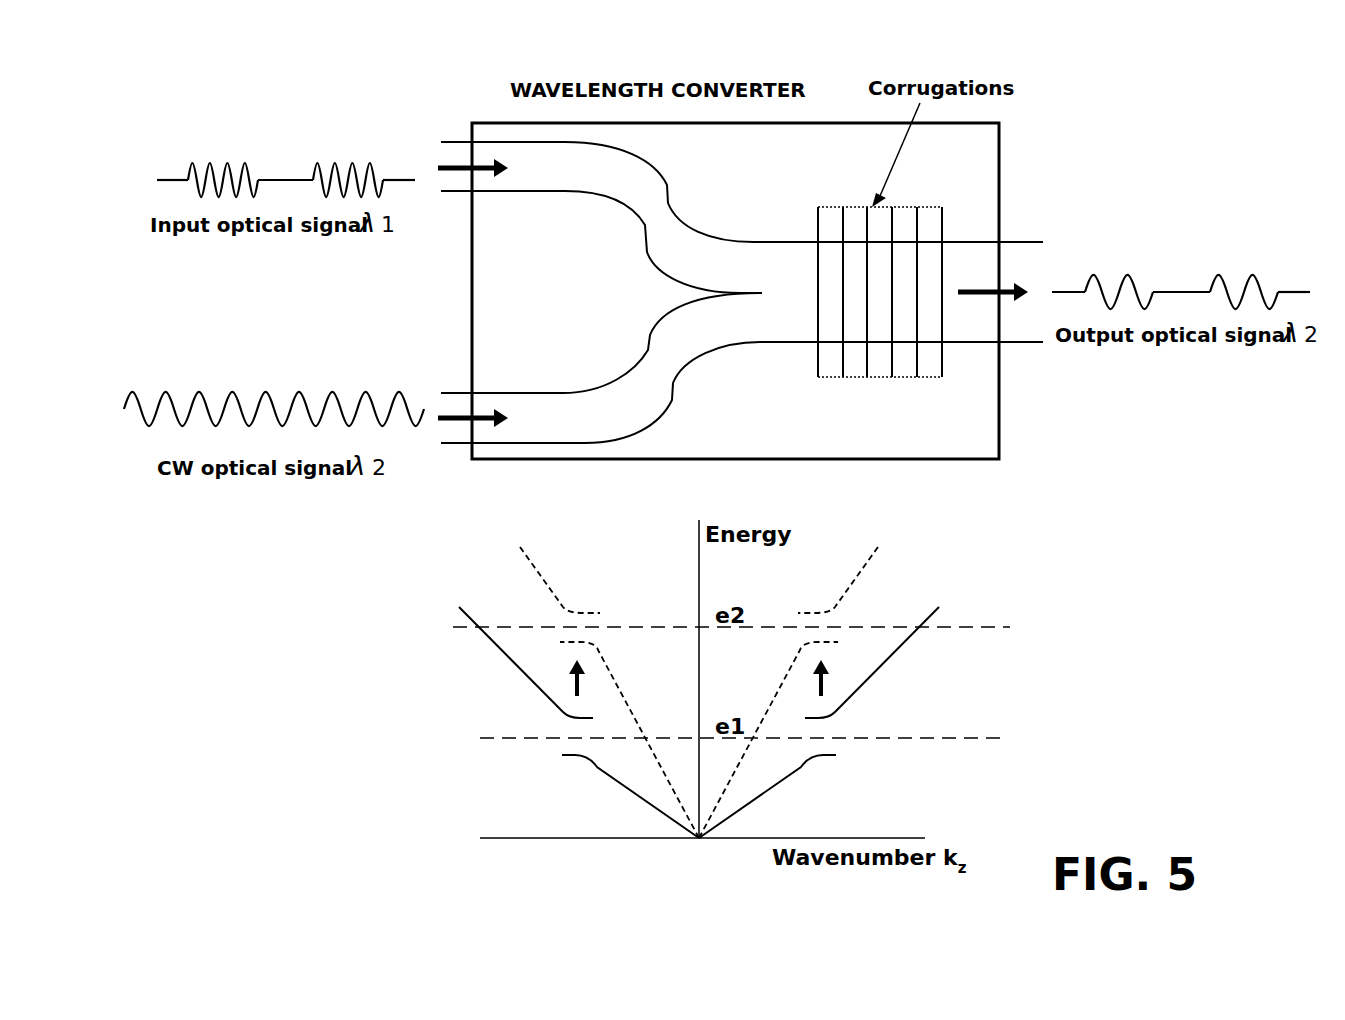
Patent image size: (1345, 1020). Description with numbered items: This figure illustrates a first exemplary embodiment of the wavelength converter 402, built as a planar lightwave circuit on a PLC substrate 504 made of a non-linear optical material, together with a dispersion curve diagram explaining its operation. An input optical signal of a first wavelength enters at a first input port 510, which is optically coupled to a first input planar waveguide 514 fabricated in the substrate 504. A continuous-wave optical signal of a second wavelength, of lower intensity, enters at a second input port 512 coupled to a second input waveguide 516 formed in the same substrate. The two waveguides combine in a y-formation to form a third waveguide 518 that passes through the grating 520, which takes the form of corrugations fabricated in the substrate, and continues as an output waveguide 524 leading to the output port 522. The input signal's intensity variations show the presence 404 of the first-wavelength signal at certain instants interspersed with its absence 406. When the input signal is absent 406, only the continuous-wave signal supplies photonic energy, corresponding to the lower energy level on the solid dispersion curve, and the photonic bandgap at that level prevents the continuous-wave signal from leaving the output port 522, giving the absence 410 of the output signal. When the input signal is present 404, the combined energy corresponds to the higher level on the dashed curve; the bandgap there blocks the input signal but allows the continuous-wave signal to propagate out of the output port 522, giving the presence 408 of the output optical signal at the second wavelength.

The wavelength converter 402 is at (1094, 153).
The presence of the input optical signal 404 is at (210, 162).
The absence of the input optical signal 406 is at (283, 178).
The presence of the output optical signal 408 is at (1127, 273).
The absence of the output optical signal 410 is at (1198, 292).
The PLC substrate 504 is at (810, 148).
The first input port 510 is at (437, 150).
The second input port 512 is at (432, 405).
The first input planar waveguide 514 is at (553, 172).
The second input waveguide 516 is at (570, 415).
The third waveguide 518 is at (790, 275).
The grating 520 is at (860, 378).
The output port 522 is at (1032, 265).
The output waveguide 524 is at (982, 320).